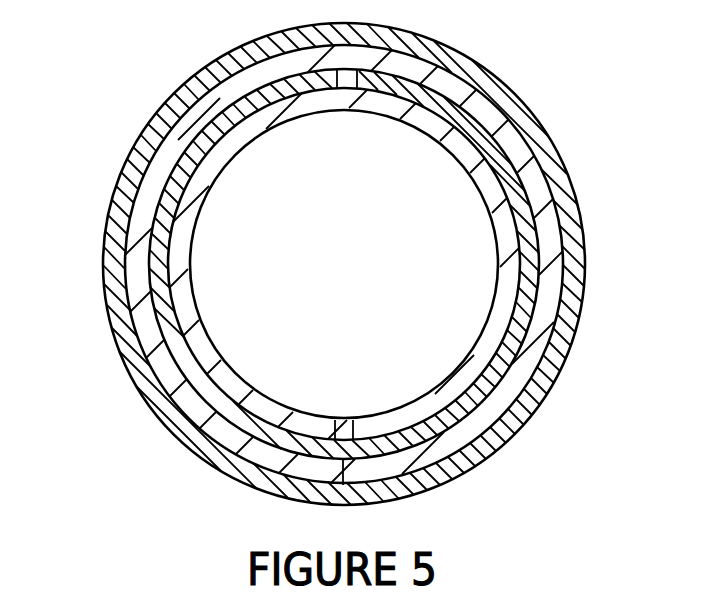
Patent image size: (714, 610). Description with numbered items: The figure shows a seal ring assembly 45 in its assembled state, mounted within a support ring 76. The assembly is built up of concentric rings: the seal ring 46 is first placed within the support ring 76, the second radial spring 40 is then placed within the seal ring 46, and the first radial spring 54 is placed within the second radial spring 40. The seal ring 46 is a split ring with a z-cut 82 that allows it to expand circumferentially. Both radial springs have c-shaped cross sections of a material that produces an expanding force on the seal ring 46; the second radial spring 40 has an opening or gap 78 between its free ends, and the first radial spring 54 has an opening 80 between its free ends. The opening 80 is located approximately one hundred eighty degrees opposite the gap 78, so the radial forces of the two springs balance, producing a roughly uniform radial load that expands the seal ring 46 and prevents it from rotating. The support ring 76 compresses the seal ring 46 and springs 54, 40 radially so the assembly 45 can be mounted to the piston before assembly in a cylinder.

The second radial spring 40 is at (525, 317).
The seal ring assembly 45 is at (118, 321).
The seal ring 46 is at (557, 245).
The first radial spring 54 is at (500, 332).
The support ring 76 is at (543, 122).
The opening or gap 78 is at (341, 82).
The opening 80 is at (337, 433).
The z-cut 82 is at (343, 478).